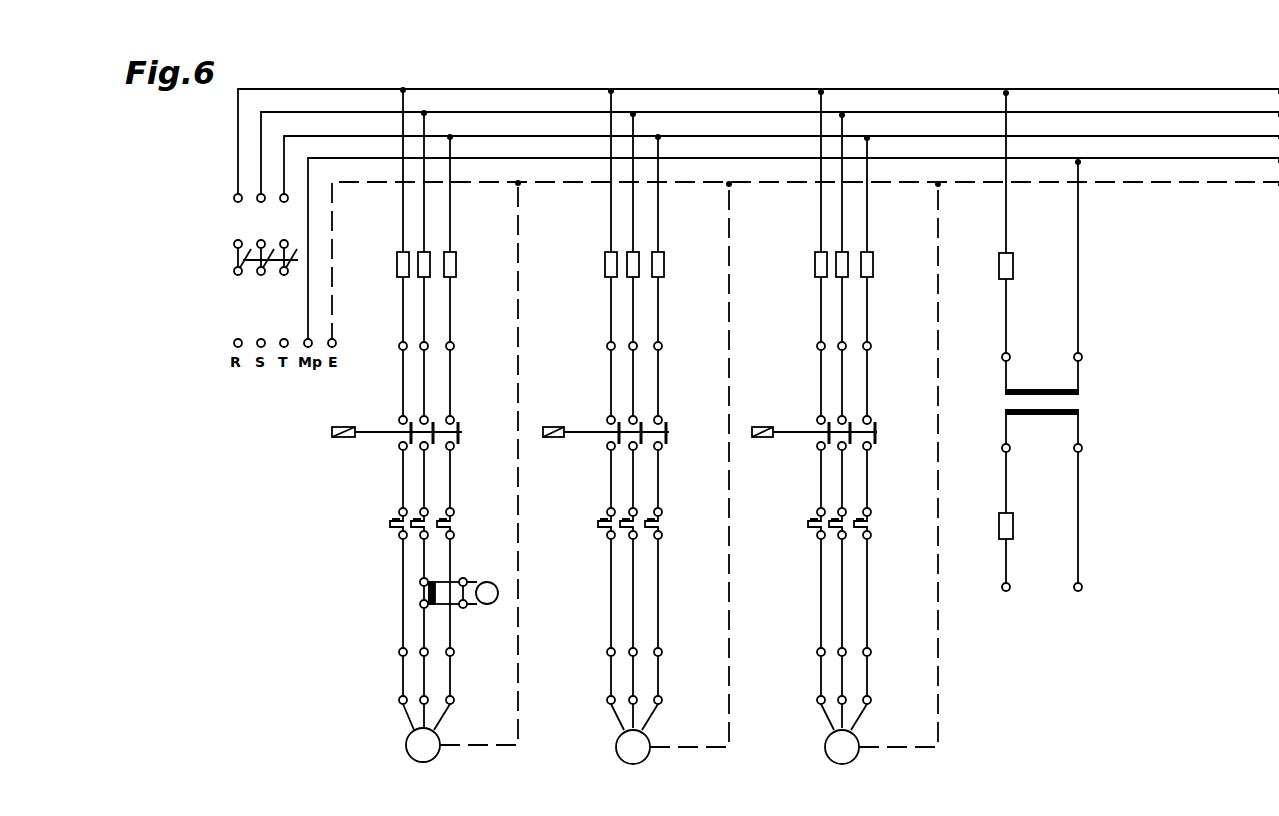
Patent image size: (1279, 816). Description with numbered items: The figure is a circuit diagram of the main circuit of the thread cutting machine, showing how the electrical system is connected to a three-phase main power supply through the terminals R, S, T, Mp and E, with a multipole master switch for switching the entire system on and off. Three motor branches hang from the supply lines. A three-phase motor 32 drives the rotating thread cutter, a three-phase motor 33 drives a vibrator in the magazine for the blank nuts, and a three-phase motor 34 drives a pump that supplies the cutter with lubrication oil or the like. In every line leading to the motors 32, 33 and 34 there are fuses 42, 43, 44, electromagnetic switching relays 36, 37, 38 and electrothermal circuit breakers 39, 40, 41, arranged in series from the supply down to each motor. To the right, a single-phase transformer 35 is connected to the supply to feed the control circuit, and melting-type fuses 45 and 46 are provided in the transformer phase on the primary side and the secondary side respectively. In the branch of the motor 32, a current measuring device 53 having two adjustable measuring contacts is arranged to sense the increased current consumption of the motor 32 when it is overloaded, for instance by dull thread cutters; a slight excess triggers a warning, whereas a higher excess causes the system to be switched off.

The three-phase motor 32 is at (405, 745).
The three-phase motor 33 is at (616, 745).
The three-phase motor 34 is at (825, 747).
The single-phase transformer 35 is at (1092, 407).
The electromagnetic switching relay 36 is at (395, 446).
The electromagnetic switching relay 37 is at (600, 446).
The electromagnetic switching relay 38 is at (809, 446).
The electrothermal circuit breaker 39 is at (388, 535).
The electrothermal circuit breaker 40 is at (600, 539).
The electrothermal circuit breaker 41 is at (810, 541).
The fuses 42 is at (471, 258).
The fuses 43 is at (679, 265).
The fuses 44 is at (888, 266).
The melting-type fuse 45 is at (1014, 266).
The melting-type fuse 46 is at (1013, 528).
The current measuring device 53 is at (489, 605).